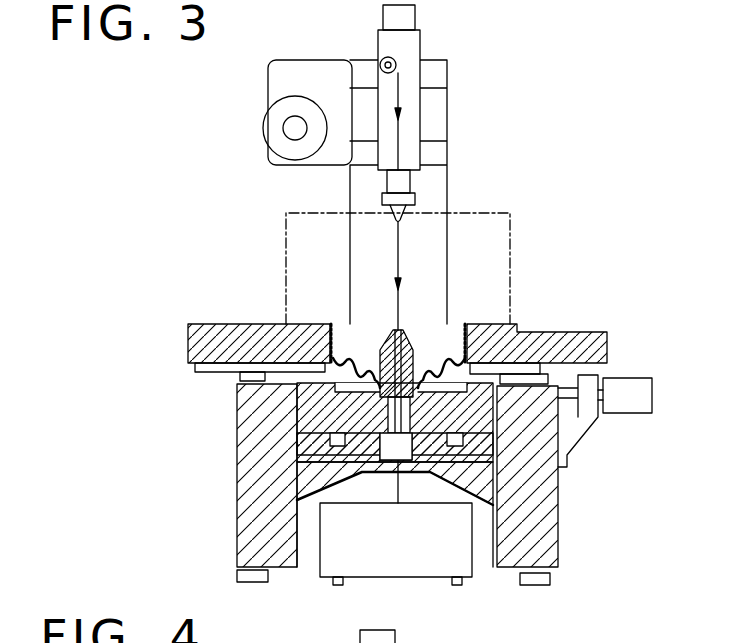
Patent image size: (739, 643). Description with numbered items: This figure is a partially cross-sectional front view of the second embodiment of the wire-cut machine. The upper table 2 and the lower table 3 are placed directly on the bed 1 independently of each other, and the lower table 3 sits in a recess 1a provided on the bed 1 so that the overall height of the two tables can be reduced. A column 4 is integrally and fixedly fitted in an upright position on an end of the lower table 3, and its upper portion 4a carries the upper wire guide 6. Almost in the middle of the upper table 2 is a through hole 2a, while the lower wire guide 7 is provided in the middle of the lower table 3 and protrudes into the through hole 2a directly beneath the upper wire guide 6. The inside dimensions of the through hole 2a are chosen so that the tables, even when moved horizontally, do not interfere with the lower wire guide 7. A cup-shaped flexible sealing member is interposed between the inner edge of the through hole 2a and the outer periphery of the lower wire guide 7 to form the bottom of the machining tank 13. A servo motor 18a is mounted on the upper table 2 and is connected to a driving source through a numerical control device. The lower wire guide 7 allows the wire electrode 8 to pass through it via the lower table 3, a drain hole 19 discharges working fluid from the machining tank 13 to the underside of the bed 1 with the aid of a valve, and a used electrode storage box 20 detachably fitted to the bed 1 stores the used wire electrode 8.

The bed 1 is at (237, 498).
The recess 1a is at (300, 440).
The upper table 2 is at (197, 348).
The through hole 2a is at (345, 330).
The lower table 3 is at (308, 413).
The column 4 is at (437, 178).
The drive housing 4a is at (437, 75).
The upper wire guide 6 is at (408, 210).
The lower wire guide 7 is at (423, 330).
The wire electrode 8 is at (395, 237).
The machining tank 13 is at (286, 243).
The servo motor 18a is at (632, 413).
The drain hole 19 is at (357, 387).
The used electrode storage box 20 is at (425, 565).